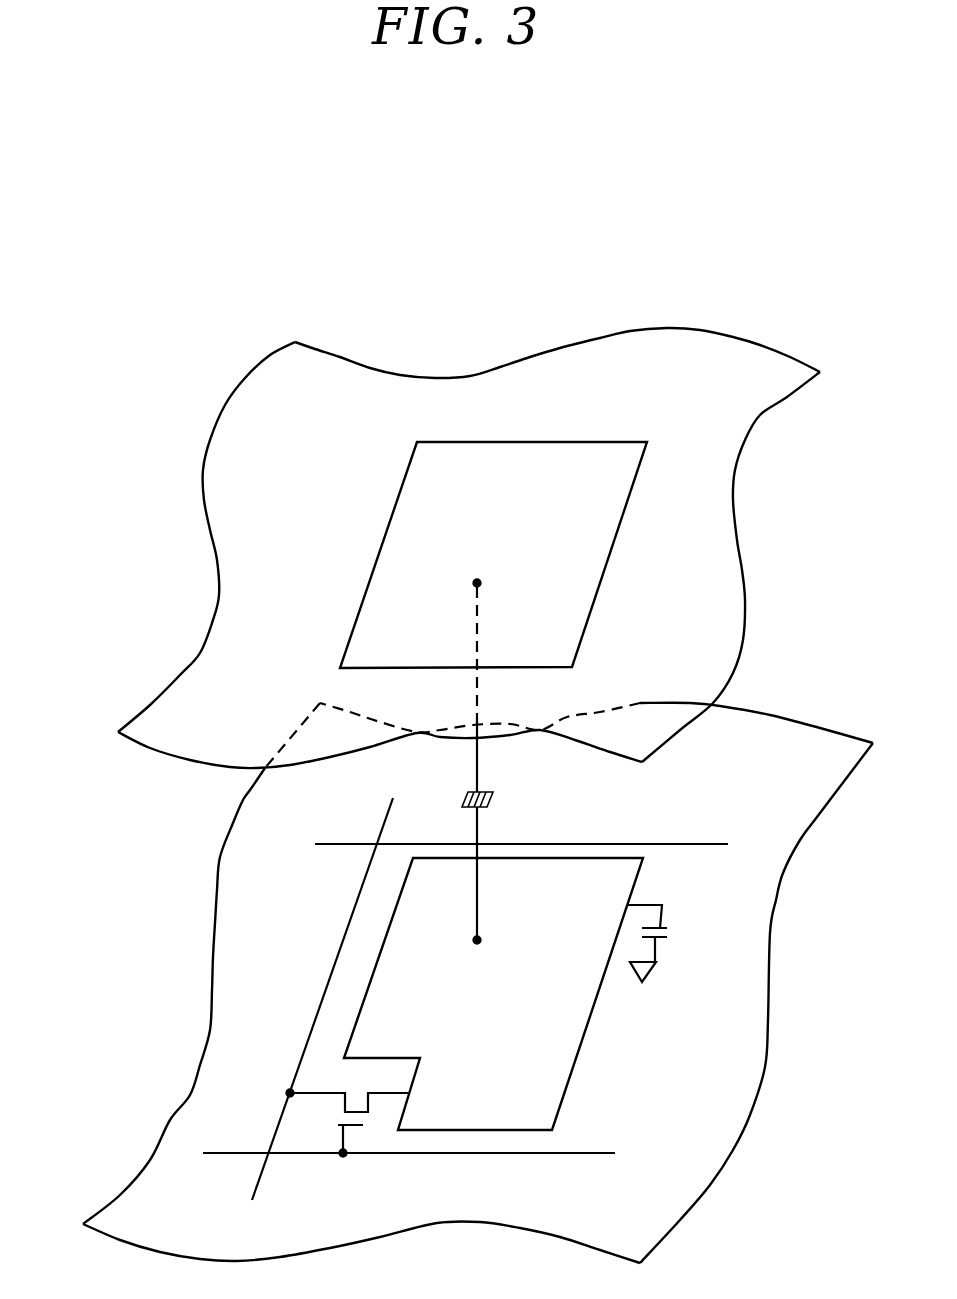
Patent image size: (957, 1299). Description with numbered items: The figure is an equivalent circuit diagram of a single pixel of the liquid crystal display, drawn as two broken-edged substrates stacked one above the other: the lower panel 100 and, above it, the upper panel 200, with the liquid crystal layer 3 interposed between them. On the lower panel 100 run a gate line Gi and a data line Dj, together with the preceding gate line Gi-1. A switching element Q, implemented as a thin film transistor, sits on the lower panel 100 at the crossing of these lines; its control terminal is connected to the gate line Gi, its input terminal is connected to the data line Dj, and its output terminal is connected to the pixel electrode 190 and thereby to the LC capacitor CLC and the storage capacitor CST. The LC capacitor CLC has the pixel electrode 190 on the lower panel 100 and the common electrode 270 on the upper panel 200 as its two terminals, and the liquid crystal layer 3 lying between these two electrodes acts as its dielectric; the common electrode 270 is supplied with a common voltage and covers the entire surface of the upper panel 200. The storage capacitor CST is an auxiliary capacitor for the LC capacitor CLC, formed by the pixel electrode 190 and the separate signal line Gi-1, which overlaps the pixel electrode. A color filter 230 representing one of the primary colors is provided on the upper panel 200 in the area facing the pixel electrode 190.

The liquid crystal layer 3 is at (106, 858).
The lower panel 100 is at (792, 952).
The pixel electrode 190 is at (578, 1055).
The upper panel 200 is at (499, 548).
The color filter 230 is at (607, 573).
The common electrode 270 is at (734, 515).
The switching element Q is at (347, 1123).
The LC capacitor CLC is at (512, 761).
The storage capacitor CST is at (672, 943).
The data line Dj is at (322, 999).
The gate line Gi is at (407, 1134).
The previous gate line Gi-1 is at (503, 866).